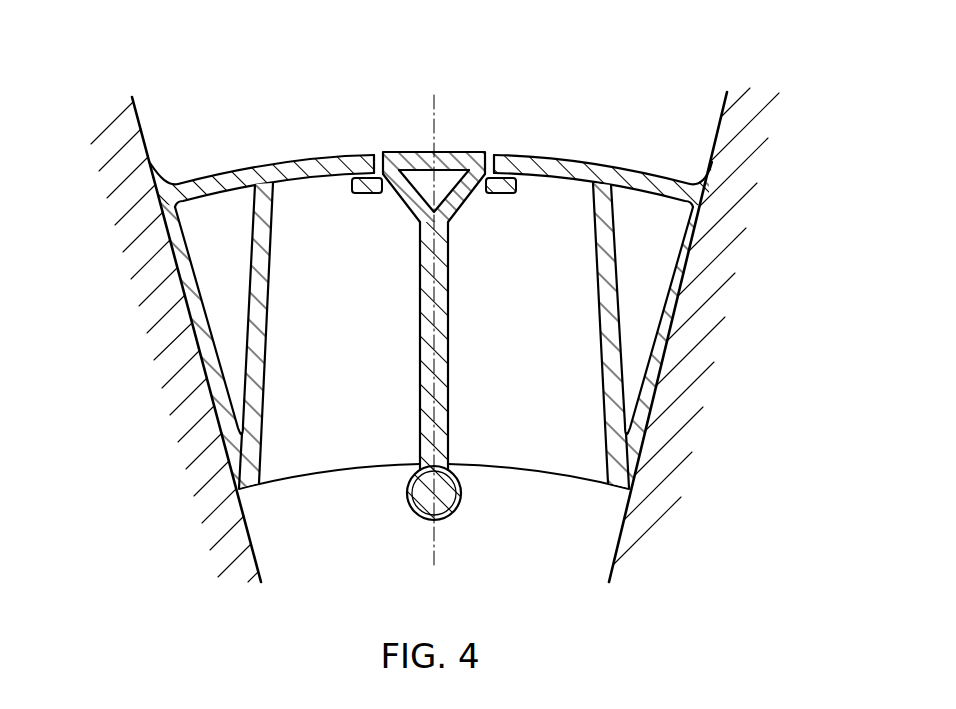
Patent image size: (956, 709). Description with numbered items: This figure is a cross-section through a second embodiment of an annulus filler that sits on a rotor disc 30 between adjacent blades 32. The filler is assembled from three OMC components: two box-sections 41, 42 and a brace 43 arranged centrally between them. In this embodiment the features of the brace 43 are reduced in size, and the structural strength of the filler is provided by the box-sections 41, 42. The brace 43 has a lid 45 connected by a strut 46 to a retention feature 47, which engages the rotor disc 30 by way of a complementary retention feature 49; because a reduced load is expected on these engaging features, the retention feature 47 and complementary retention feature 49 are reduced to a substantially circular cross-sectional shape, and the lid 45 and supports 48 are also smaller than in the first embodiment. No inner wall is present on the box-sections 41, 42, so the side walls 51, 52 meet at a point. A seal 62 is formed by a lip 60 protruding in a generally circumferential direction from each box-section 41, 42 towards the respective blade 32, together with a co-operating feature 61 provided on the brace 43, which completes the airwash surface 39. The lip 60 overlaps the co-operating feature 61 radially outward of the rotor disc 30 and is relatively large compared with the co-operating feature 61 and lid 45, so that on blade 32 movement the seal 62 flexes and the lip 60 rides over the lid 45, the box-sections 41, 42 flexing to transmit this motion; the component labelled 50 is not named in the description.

The rotor disc 30 is at (603, 533).
The blade 32 is at (118, 128).
The airwash surface 39 is at (431, 135).
The box-section 41 is at (264, 271).
The box-section 42 is at (606, 300).
The brace 43 is at (462, 347).
The lid 45 is at (437, 175).
The strut 46 is at (441, 346).
The retention feature 47 is at (417, 518).
The supports 48 is at (408, 198).
The complementary retention feature 49 is at (457, 519).
The rail end 50 is at (212, 177).
The side wall 51 is at (222, 399).
The side wall 52 is at (434, 335).
The lip 60 is at (326, 167).
The co-operating feature 61 is at (366, 188).
The seal 62 is at (379, 142).